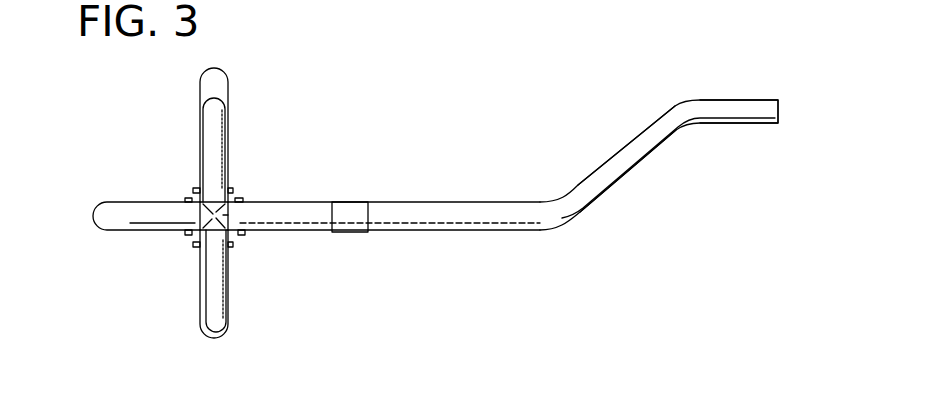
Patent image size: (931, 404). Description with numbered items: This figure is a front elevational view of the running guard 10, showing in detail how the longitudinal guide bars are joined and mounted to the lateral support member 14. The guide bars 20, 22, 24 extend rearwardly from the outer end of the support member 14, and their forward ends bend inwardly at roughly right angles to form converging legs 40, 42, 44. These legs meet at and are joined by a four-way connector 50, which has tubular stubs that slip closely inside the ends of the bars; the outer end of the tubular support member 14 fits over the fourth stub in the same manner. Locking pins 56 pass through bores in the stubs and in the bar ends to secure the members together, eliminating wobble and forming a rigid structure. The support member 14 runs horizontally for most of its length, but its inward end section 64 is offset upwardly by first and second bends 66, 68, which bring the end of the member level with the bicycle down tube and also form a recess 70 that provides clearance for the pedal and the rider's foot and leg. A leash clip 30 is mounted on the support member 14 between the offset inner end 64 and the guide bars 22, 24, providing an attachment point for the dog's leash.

The running guard 10 is at (495, 308).
The lateral support member 14 is at (447, 215).
The guide bar 20 is at (118, 212).
The guide bar 22 is at (207, 315).
The guide bar 24 is at (210, 85).
The leash clip 30 is at (352, 210).
The converging leg 40 is at (128, 224).
The converging leg 42 is at (223, 297).
The converging leg 44 is at (205, 147).
The 4-way connector 50 is at (226, 213).
The locking pins 56 is at (240, 200).
The inward end section 64 is at (740, 107).
The first bend 66 is at (565, 220).
The second bend 68 is at (667, 114).
The recess 70 is at (718, 192).